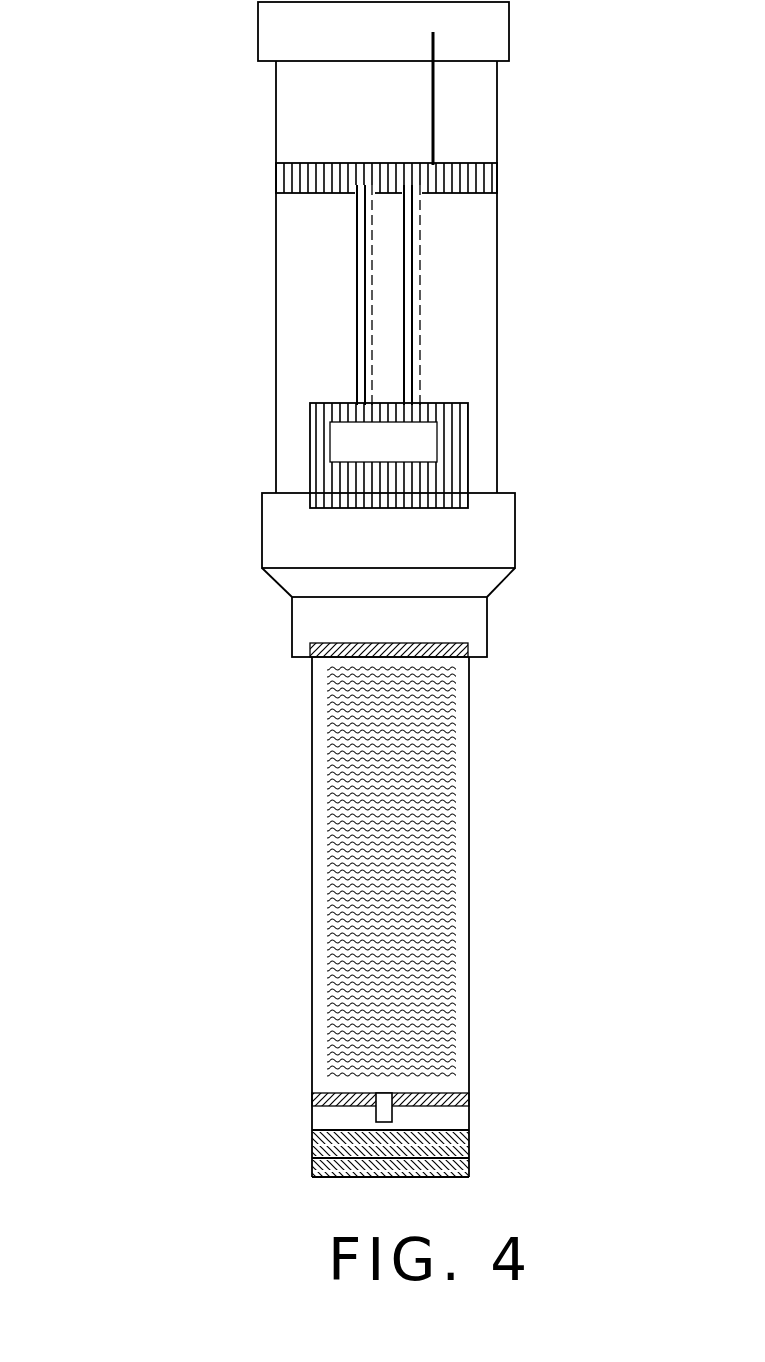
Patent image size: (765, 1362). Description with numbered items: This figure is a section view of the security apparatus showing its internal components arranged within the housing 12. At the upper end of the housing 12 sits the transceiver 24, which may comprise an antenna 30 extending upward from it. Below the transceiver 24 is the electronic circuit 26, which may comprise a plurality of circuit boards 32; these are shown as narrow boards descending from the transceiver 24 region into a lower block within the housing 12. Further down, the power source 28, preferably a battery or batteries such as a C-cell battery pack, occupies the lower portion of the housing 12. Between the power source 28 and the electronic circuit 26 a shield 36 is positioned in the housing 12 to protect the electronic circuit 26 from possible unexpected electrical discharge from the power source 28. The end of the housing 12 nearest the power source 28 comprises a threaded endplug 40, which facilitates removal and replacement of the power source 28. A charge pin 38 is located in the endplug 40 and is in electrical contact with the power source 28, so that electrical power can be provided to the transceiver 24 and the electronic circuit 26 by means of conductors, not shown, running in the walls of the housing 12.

The housing 12 is at (262, 566).
The transceiver 24 is at (276, 171).
The electronic circuit 26 is at (190, 383).
The power source 28 is at (459, 757).
The antenna 30 is at (430, 38).
The circuit boards 32 is at (355, 322).
The shield 36 is at (437, 642).
The charge pin 38 is at (396, 1115).
The threaded endplug 40 is at (474, 1148).